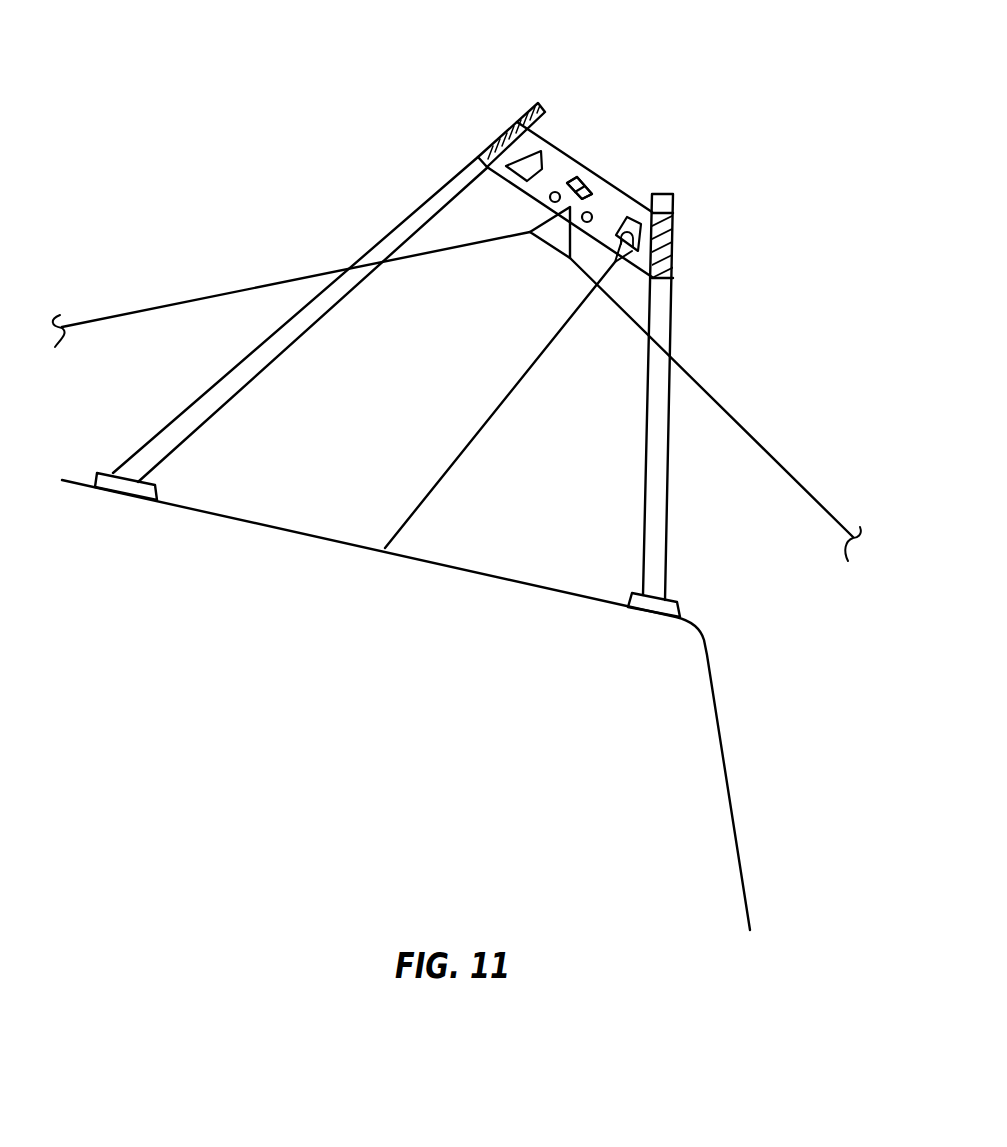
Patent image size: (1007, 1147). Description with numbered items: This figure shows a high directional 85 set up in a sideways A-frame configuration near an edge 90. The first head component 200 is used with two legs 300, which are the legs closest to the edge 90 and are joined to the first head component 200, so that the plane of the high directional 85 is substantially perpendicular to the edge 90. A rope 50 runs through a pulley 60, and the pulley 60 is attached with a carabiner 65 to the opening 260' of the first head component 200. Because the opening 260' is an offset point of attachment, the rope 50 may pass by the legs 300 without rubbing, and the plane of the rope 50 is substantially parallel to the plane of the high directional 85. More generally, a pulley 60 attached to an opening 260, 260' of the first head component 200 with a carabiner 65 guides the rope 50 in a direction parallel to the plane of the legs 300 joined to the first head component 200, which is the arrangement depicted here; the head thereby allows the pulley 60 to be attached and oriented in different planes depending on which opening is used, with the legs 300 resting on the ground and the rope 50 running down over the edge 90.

The high directional 85 is at (325, 134).
The legs 300 is at (432, 196).
The first head component 200 is at (607, 203).
The openings 260 is at (678, 199).
The opening 260' is at (627, 125).
The carabiner 65 is at (567, 178).
The pulley 60 is at (557, 237).
The rope 50 is at (135, 311).
The edge 90 is at (698, 628).